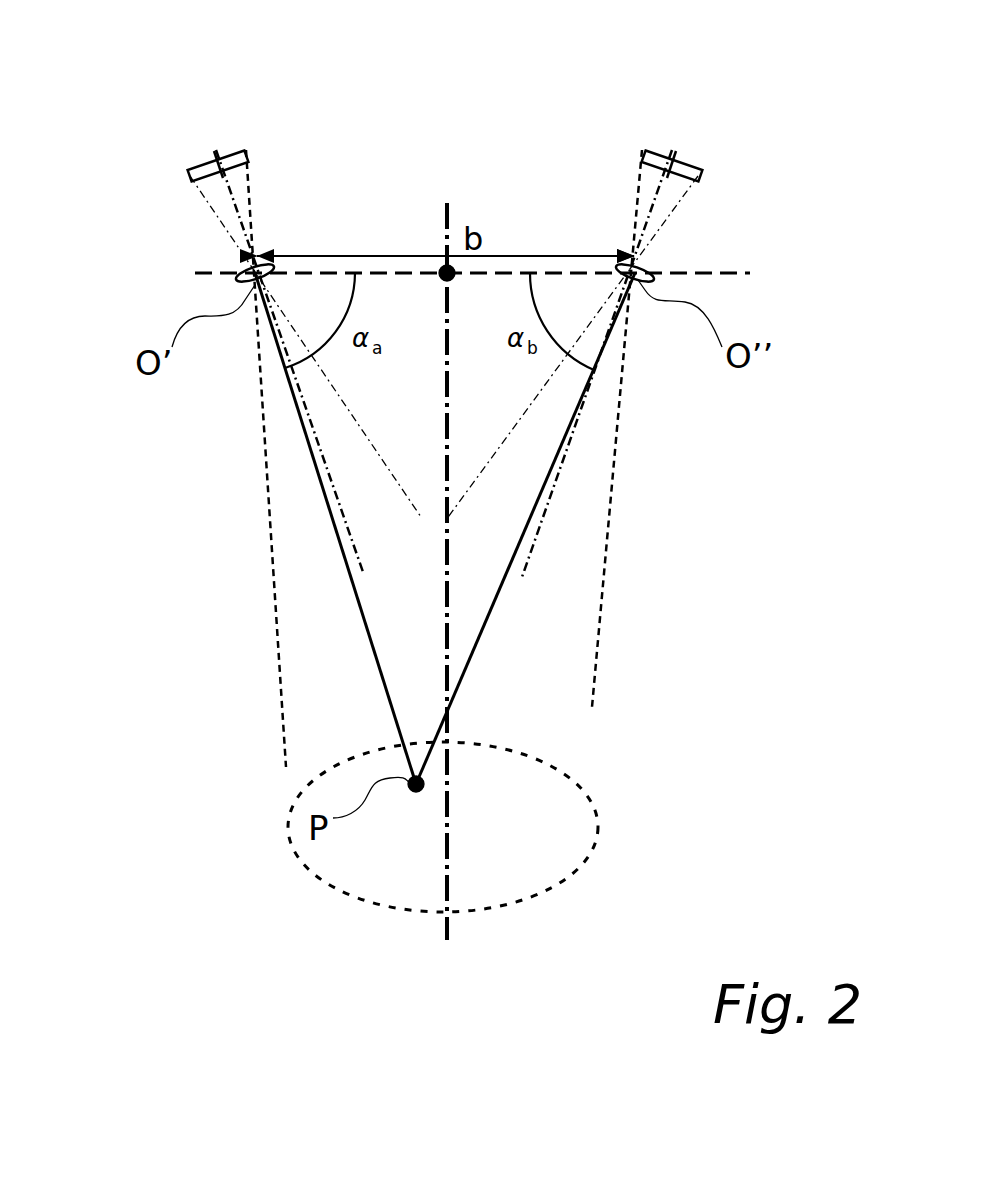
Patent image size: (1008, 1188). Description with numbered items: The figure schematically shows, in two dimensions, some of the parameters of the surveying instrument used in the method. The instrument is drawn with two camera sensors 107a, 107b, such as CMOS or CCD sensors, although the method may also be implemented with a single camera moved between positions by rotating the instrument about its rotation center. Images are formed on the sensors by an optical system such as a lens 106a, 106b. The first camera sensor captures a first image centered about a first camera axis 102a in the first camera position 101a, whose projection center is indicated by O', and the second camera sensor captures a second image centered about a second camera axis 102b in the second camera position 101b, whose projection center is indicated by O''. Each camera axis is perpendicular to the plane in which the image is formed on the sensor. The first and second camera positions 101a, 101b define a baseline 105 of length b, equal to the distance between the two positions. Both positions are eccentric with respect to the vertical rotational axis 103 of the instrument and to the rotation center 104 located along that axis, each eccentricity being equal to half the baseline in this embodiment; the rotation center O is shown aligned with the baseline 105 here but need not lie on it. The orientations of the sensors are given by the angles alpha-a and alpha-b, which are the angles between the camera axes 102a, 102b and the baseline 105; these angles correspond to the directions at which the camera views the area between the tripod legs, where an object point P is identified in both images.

The first camera position 101a is at (207, 252).
The second camera position 101b is at (680, 252).
The first camera axis 102a is at (328, 473).
The second camera axis 102b is at (583, 413).
The vertical rotational axis 103 is at (445, 205).
The rotation center 104 is at (443, 263).
The baseline 105 is at (597, 272).
The lens 106a is at (240, 282).
The lens 106b is at (640, 282).
The first camera sensor 107a is at (227, 155).
The second camera sensor 107b is at (688, 157).